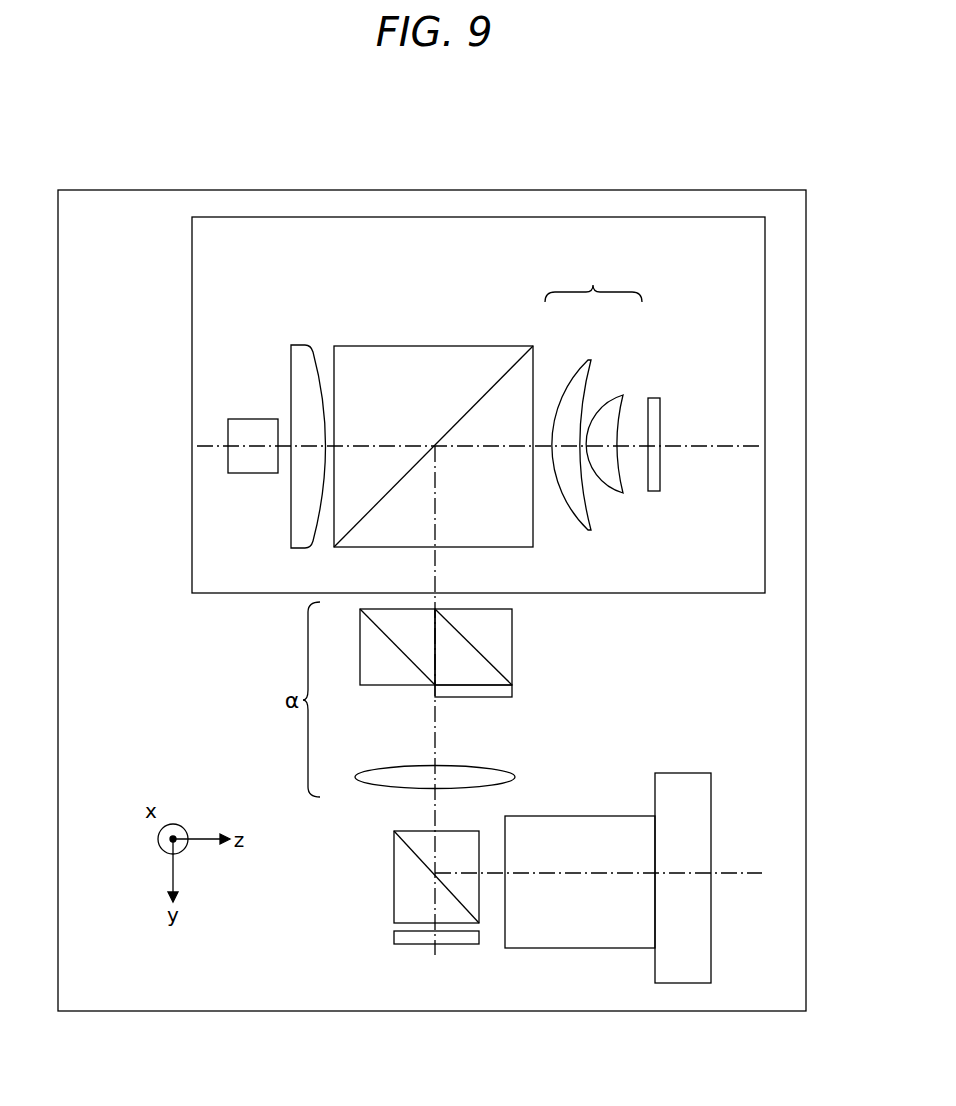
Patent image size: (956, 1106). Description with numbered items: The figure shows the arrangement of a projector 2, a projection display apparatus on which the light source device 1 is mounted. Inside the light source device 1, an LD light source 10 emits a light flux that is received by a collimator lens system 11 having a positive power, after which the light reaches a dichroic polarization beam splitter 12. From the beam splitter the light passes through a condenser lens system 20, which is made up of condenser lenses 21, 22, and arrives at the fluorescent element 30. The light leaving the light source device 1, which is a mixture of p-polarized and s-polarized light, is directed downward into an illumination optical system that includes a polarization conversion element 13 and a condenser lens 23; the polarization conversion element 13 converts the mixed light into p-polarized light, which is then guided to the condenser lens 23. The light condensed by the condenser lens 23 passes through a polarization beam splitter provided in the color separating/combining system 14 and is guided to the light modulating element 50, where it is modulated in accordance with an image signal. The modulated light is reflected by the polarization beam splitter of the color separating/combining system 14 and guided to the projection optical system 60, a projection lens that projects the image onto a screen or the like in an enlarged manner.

The light source device 1 is at (192, 549).
The projector 2 is at (515, 190).
The LD light source 10 is at (243, 418).
The collimator lens system 11 is at (298, 344).
The dichroic polarization beam splitter 12 is at (507, 368).
The polarization conversion element 13 is at (514, 650).
The color separating/combining system 14 is at (396, 882).
The condenser lens system 20 is at (593, 281).
The condenser lens 21 is at (577, 358).
The condenser lens 22 is at (618, 393).
The condenser lens 23 is at (485, 770).
The fluorescent element 30 is at (655, 397).
The light modulating element 50 is at (394, 940).
The projection optical system 60 is at (596, 822).